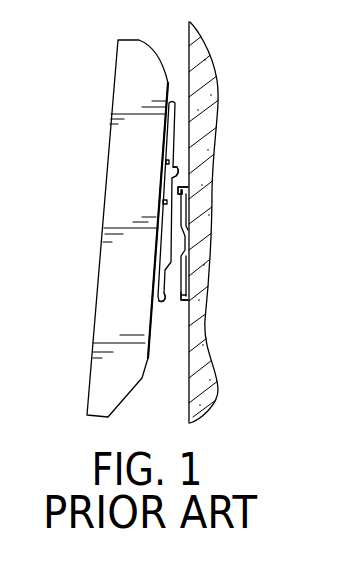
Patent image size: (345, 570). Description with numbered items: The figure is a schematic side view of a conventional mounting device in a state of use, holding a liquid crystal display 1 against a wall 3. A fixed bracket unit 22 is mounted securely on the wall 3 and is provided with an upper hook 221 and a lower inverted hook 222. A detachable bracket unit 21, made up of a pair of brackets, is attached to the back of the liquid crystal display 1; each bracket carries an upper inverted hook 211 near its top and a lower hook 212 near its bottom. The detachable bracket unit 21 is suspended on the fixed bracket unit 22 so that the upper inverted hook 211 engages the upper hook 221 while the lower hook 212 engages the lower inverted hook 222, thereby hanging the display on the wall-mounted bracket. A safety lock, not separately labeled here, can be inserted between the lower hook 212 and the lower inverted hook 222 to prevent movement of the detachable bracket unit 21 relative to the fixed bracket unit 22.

The liquid crystal display 1 is at (121, 176).
The wall 3 is at (183, 58).
The detachable bracket unit 21 is at (173, 137).
The upper inverted hook 211 is at (178, 173).
The lower hook 212 is at (163, 298).
The fixed bracket unit 22 is at (190, 245).
The upper hook 221 is at (182, 190).
The lower inverted hook 222 is at (183, 300).